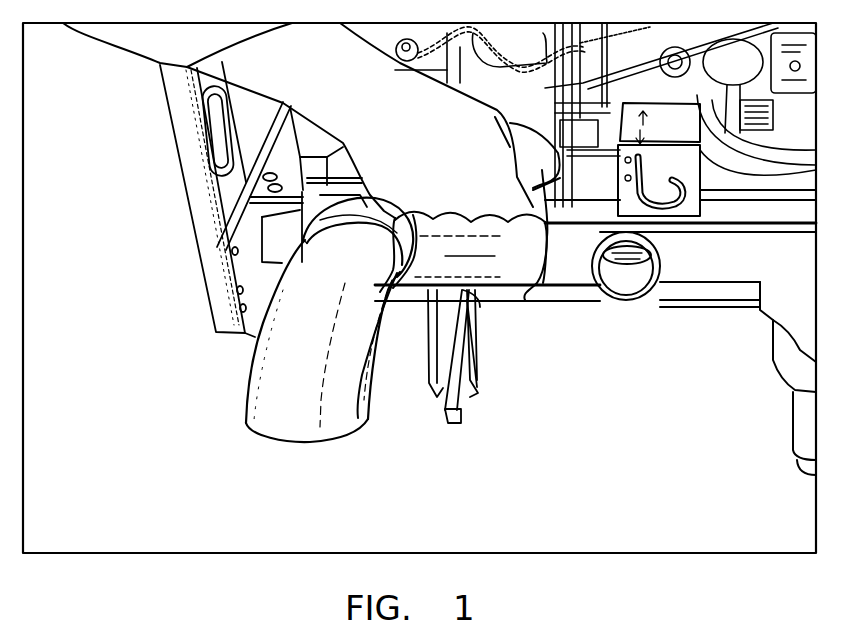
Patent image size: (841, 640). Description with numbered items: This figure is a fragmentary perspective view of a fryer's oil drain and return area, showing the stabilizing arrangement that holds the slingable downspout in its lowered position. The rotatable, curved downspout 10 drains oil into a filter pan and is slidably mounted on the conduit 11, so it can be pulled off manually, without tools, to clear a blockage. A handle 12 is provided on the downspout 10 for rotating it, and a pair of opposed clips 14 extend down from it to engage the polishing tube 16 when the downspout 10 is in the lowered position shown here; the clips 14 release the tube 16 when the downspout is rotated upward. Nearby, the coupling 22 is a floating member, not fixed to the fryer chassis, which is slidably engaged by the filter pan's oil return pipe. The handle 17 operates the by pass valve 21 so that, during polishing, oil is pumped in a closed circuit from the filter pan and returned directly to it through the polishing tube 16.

The downspout 10 is at (258, 382).
The conduit 11 is at (332, 207).
The handle 12 is at (524, 305).
The clips 14 is at (477, 370).
The polishing tube 16 is at (463, 413).
The handle 17 is at (683, 187).
The by pass valve 21 is at (693, 217).
The coupling 22 is at (638, 297).